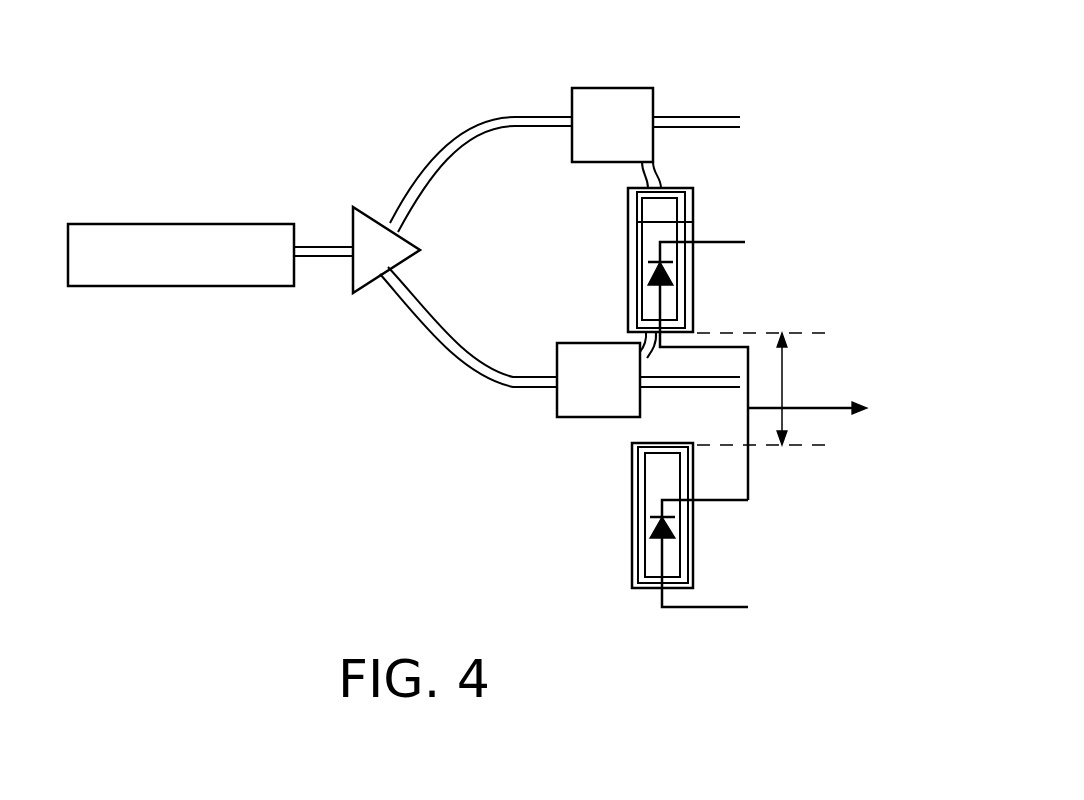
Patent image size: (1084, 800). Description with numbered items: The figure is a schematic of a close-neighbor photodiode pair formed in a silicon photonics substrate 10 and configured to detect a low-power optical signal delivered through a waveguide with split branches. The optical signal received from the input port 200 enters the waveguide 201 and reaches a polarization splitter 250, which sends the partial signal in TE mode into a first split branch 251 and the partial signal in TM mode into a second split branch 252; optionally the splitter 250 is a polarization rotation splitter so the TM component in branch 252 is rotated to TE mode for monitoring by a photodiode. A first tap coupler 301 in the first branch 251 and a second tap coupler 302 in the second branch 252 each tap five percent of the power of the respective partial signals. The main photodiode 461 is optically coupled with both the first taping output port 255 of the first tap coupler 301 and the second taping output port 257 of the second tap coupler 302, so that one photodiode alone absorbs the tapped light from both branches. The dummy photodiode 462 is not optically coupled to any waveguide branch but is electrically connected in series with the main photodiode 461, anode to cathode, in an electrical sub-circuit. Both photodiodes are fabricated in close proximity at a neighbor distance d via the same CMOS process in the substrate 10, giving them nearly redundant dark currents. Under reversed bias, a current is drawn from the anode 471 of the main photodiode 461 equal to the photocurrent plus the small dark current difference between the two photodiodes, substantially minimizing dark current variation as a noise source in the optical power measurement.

The silicon photonics substrate 10 is at (338, 454).
The input port 200 is at (177, 228).
The waveguide 201 is at (317, 258).
The polarization splitter 250 is at (350, 210).
The first split branch 251 is at (455, 145).
The second split branch 252 is at (513, 375).
The first taping output port 255 is at (640, 173).
The second taping output port 257 is at (640, 337).
The first tap coupler 301 is at (577, 87).
The second tap coupler 302 is at (575, 353).
The main PD 461 is at (636, 295).
The dummy PD 462 is at (638, 550).
The anode of the main PD 471 is at (828, 410).